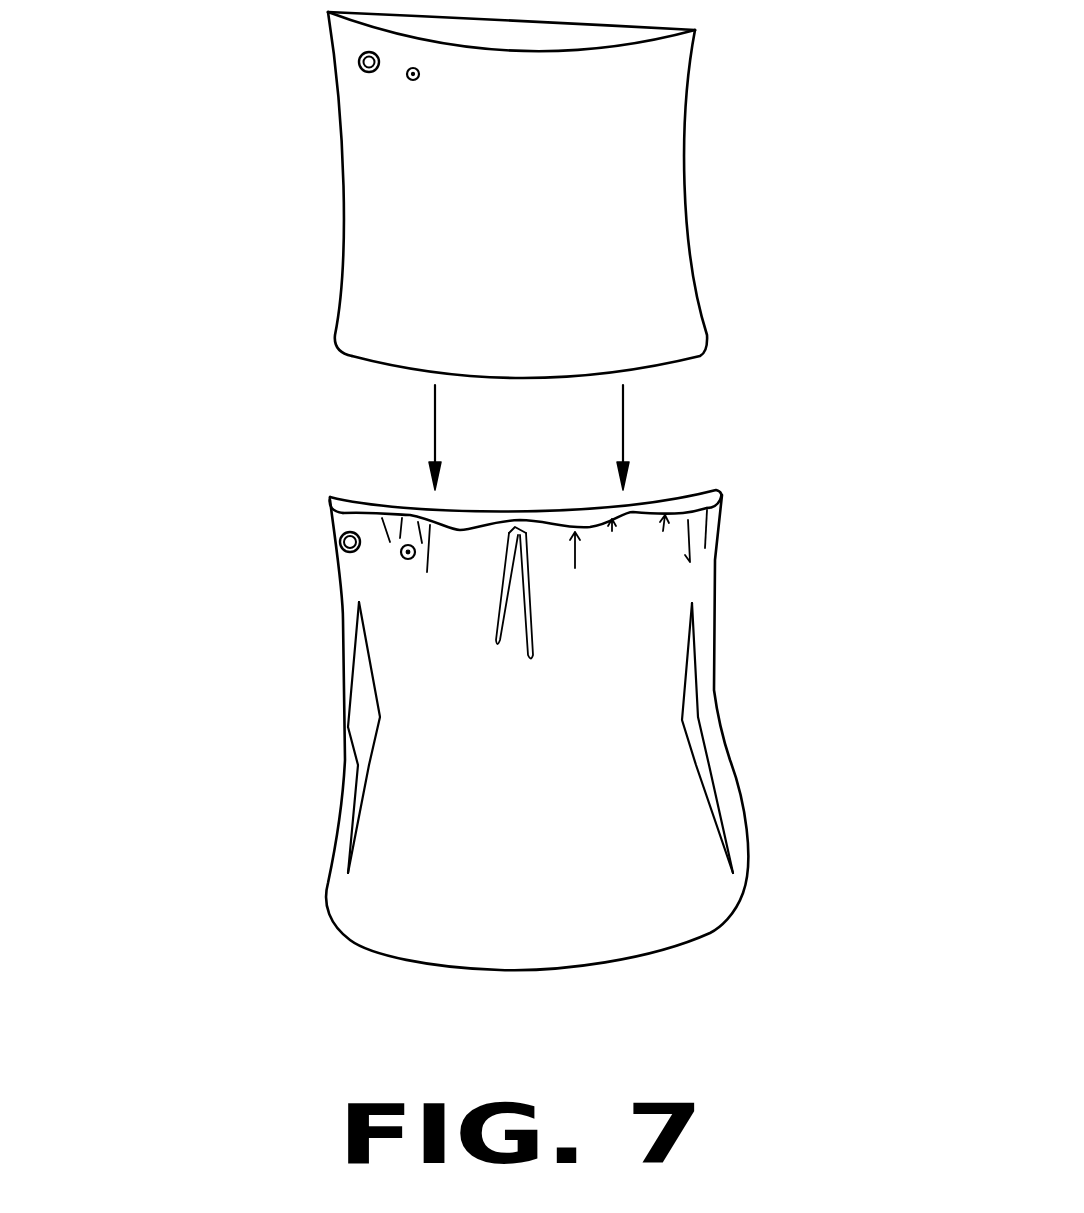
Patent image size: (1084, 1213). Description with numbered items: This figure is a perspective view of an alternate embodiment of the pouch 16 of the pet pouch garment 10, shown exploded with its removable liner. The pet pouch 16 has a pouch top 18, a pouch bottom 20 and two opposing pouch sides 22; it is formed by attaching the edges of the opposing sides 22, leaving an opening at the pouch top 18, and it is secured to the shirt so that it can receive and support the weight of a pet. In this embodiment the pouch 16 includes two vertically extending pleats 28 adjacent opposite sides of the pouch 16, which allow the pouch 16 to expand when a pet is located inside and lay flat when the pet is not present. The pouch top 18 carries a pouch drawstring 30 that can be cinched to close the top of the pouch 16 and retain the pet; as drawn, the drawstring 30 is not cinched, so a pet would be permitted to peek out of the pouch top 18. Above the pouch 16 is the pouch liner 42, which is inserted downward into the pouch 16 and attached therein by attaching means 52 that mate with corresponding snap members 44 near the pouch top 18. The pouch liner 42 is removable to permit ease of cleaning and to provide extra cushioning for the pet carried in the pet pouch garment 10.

The pet pouch garment 10 is at (225, 268).
The pouch liner 42 is at (657, 216).
The attaching means 52 is at (407, 79).
The pet pouch 16 is at (390, 524).
The pouch top 18 is at (710, 493).
The snap members 44 is at (401, 548).
The pouch drawstring 30 is at (503, 602).
The pleats 28 is at (375, 687).
The pouch sides 22 is at (714, 687).
The pouch bottom 20 is at (710, 930).